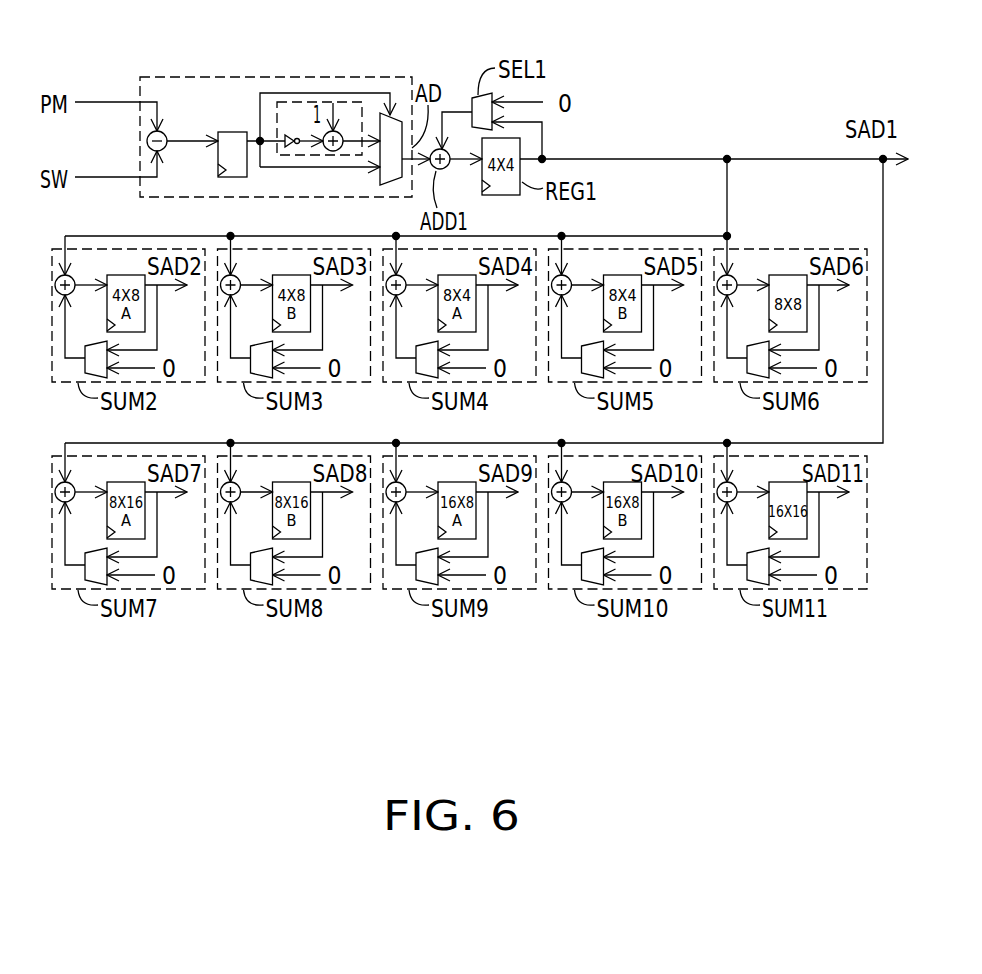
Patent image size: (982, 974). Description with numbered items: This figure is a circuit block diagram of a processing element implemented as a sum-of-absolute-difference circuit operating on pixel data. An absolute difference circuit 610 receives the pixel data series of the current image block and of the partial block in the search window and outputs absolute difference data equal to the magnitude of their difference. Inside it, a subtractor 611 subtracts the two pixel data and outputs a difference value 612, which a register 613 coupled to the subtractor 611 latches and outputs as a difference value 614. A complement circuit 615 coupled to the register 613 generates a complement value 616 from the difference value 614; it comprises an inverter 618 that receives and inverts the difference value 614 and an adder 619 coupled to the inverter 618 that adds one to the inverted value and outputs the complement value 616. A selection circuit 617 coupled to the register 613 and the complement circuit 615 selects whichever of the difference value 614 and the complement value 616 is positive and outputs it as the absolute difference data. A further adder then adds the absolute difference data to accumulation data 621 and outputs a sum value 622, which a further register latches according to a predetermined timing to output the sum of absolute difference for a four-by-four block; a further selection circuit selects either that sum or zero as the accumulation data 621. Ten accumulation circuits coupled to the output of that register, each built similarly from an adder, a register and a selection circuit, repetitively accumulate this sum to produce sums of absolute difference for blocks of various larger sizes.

The absolute difference circuit 610 is at (258, 77).
The subtractor 611 is at (163, 133).
The difference value 612 is at (184, 145).
The register 613 is at (237, 131).
The difference value 614 is at (272, 168).
The complement circuit 615 is at (297, 157).
The complement value 616 is at (357, 152).
The selection circuit 617 is at (392, 187).
The inverter 618 is at (290, 133).
The adder 619 is at (346, 132).
The accumulation data 621 is at (447, 110).
The sum value 622 is at (464, 167).